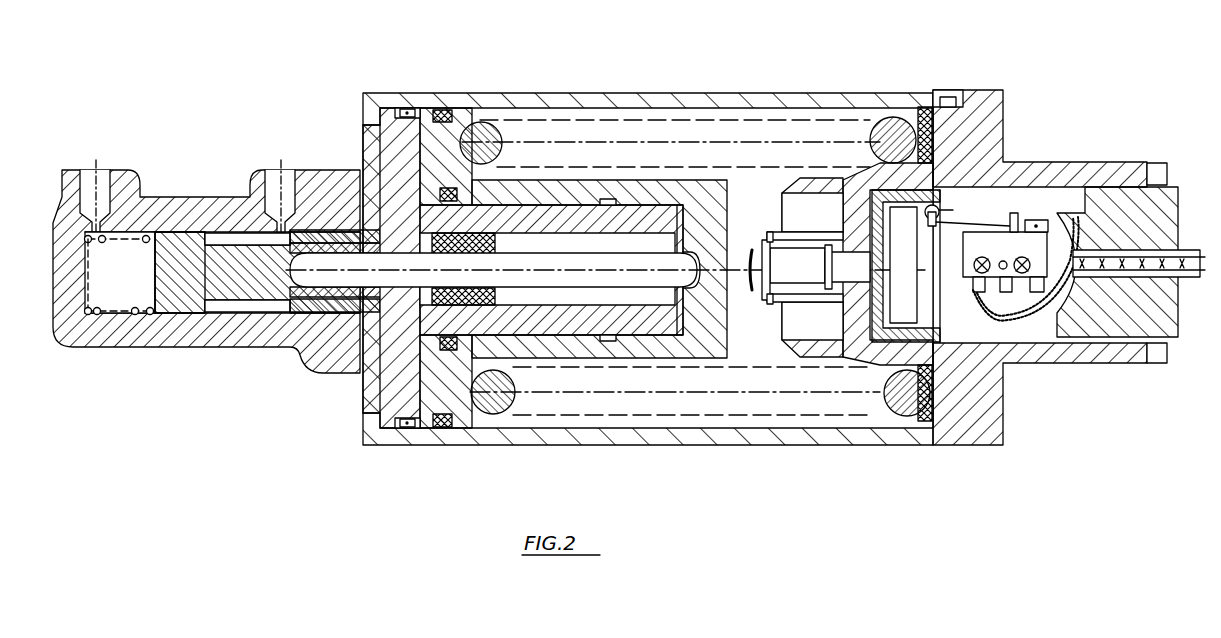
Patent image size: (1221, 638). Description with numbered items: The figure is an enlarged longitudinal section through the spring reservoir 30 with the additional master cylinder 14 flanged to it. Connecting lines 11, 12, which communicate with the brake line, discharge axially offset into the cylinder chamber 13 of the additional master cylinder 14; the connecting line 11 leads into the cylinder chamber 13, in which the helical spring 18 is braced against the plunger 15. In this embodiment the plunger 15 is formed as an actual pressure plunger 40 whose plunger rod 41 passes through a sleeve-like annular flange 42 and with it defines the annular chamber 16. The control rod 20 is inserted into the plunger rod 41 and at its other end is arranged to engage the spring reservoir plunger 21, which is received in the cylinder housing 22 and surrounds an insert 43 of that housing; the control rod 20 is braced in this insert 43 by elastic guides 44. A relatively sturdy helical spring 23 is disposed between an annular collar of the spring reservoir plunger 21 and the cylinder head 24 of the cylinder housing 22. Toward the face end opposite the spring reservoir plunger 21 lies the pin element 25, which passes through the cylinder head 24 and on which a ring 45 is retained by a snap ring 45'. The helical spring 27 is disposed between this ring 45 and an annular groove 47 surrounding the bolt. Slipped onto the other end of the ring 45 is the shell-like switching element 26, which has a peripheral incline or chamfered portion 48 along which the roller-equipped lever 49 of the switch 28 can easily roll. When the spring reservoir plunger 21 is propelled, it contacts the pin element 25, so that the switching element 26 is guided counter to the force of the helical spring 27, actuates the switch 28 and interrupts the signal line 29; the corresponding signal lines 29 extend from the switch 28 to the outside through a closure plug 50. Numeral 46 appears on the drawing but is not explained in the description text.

The connecting line 11 is at (98, 167).
The connecting line 12 is at (278, 168).
The cylinder chamber 13 is at (126, 232).
The additional master cylinder 14 is at (203, 170).
The plunger 15 is at (218, 307).
The annular chamber 16 is at (233, 232).
The helical spring 18 is at (98, 317).
The control rod 20 is at (395, 310).
The spring reservoir plunger 21 is at (657, 183).
The cylinder housing 22 is at (488, 436).
The helical spring 23 is at (889, 130).
The cylinder head 24 is at (1004, 123).
The pin element 25 is at (800, 273).
The switching element 26 is at (903, 335).
The helical spring 27 is at (836, 300).
The switch 28 is at (1068, 210).
The signal line 29 is at (1043, 307).
The spring reservoir 30 is at (627, 93).
The pressure plunger 40 is at (173, 302).
The plunger rod 41 is at (258, 285).
The annular flange 42 is at (318, 312).
The insert 43 is at (420, 118).
The elastic guides 44 is at (505, 232).
The ring 45 is at (715, 369).
The snap ring 45' is at (757, 252).
The terminal lead 46 is at (960, 108).
The annular groove 47 is at (802, 223).
The peripheral incline 48 is at (943, 323).
The roller-equipped lever 49 is at (978, 218).
The closure plug 50 is at (1170, 216).